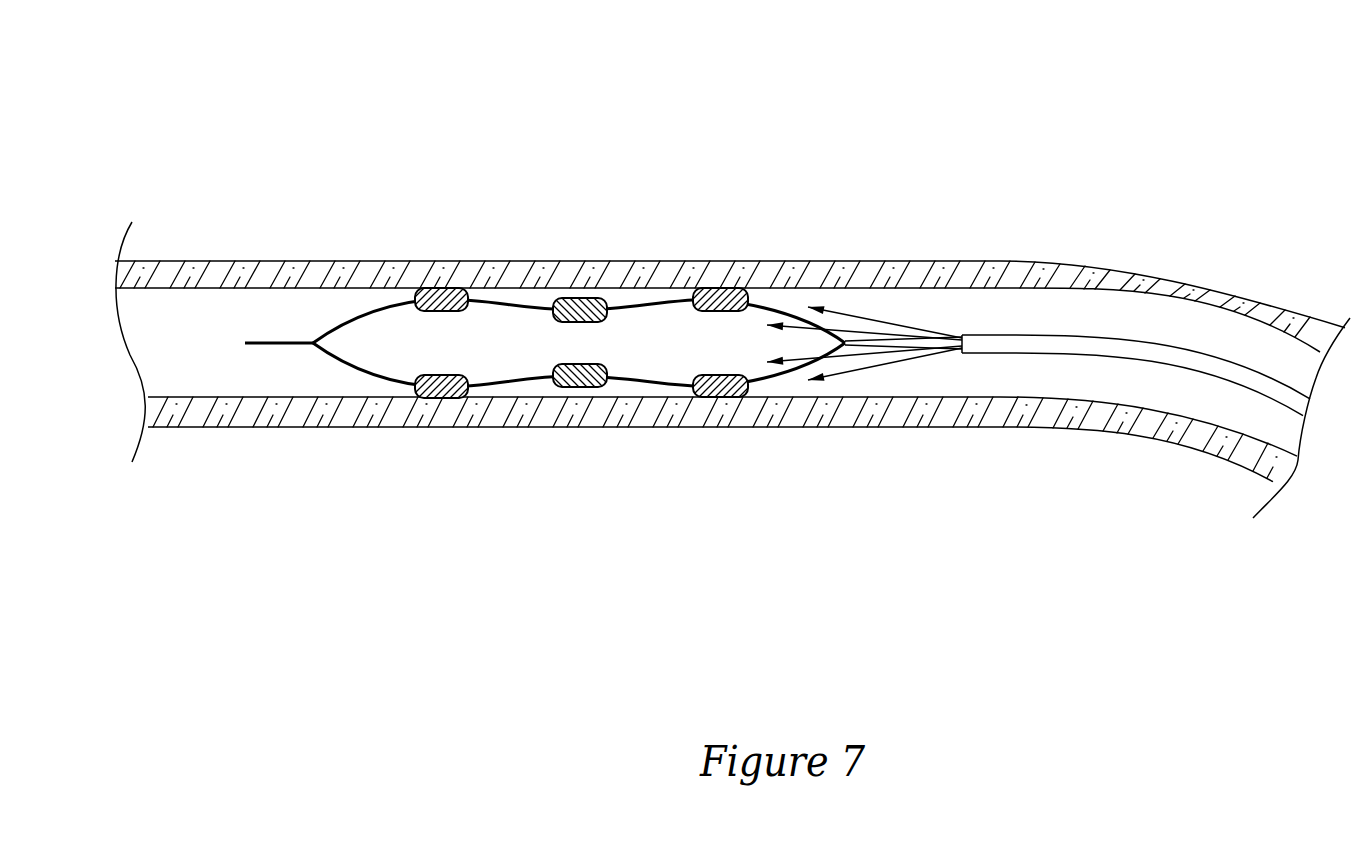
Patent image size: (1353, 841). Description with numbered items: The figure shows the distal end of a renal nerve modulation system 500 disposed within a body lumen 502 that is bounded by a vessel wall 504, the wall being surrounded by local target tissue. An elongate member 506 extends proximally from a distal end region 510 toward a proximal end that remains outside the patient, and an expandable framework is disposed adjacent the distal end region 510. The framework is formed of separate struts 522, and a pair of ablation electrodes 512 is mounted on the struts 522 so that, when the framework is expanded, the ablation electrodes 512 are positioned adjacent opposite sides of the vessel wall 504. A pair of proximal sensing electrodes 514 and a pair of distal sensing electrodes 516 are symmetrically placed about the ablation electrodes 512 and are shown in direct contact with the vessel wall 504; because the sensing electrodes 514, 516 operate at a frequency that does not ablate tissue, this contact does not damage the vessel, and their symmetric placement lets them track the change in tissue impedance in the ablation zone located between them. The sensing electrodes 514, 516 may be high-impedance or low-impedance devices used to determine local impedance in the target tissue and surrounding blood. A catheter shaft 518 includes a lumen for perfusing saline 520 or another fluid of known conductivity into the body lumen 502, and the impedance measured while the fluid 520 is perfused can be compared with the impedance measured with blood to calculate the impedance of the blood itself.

The renal nerve modulation system 500 is at (1072, 104).
The body lumen 502 is at (215, 303).
The vessel wall 504 is at (345, 273).
The elongate member 506 is at (862, 345).
The distal end region 510 is at (308, 360).
The ablation electrodes 512 is at (582, 305).
The proximal sensing electrodes 514 is at (728, 296).
The distal sensing electrodes 516 is at (438, 296).
The catheter shaft 518 is at (1160, 357).
The saline 520 is at (895, 323).
The struts 522 is at (515, 305).